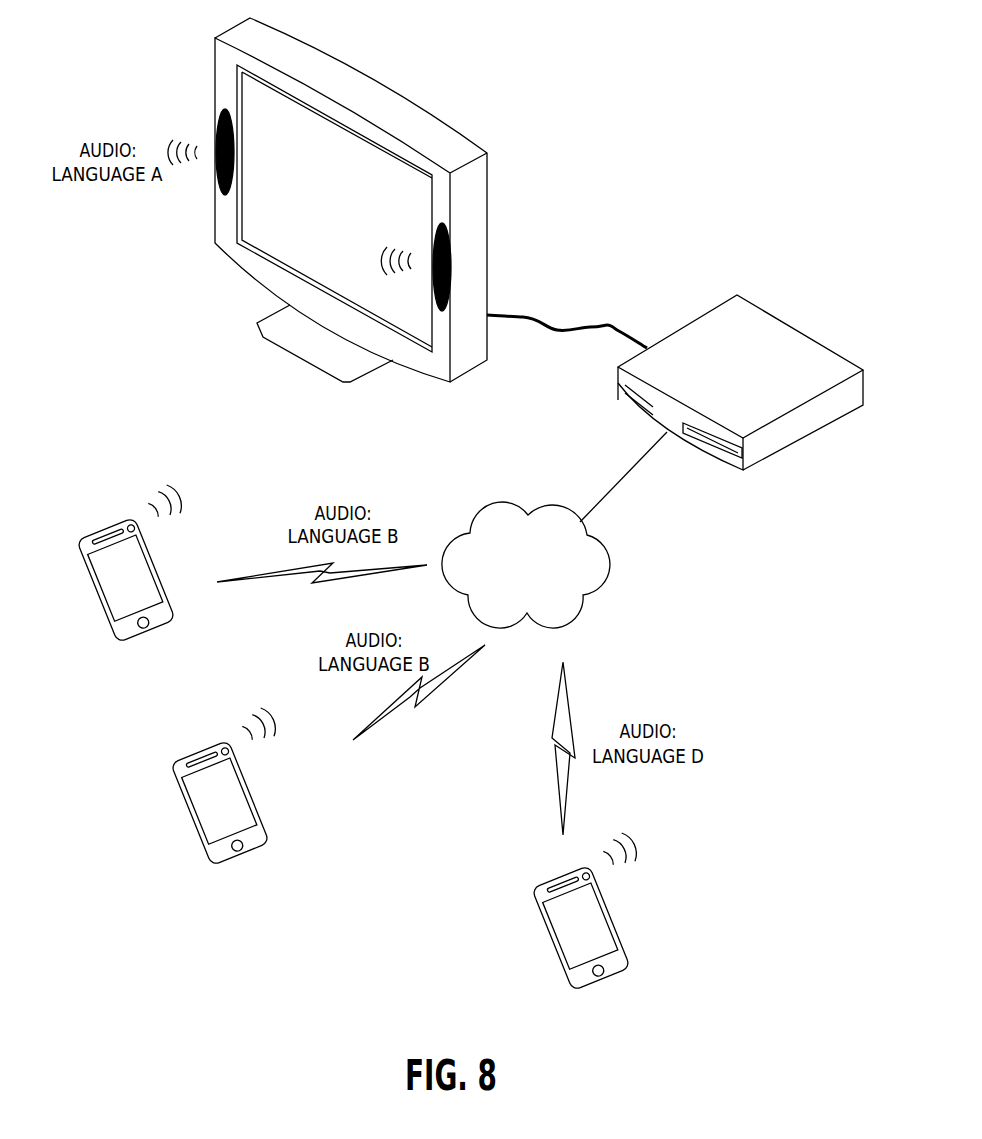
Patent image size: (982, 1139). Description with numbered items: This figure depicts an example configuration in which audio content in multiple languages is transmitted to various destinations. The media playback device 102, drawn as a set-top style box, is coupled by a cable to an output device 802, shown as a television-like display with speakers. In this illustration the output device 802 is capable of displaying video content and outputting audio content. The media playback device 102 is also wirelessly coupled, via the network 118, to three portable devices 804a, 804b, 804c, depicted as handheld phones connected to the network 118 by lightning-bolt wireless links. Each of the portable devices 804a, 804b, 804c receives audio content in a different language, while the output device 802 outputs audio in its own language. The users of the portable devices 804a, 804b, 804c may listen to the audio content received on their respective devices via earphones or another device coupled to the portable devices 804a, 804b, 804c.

The output device 802 is at (312, 208).
The media playback device 102 is at (727, 376).
The network 118 is at (513, 588).
The portable device 804a is at (160, 570).
The portable device 804b is at (254, 793).
The portable device 804c is at (615, 918).